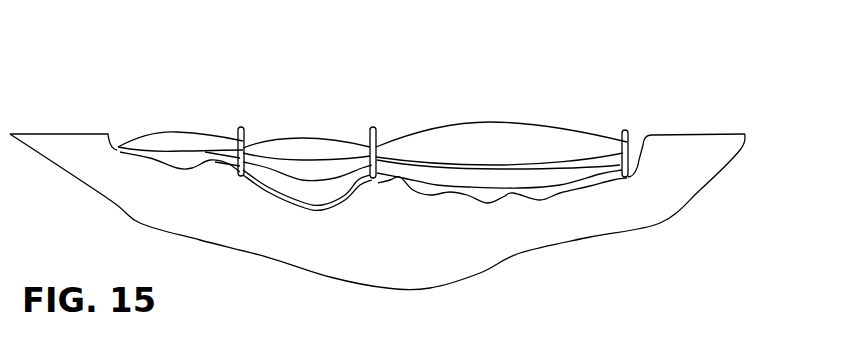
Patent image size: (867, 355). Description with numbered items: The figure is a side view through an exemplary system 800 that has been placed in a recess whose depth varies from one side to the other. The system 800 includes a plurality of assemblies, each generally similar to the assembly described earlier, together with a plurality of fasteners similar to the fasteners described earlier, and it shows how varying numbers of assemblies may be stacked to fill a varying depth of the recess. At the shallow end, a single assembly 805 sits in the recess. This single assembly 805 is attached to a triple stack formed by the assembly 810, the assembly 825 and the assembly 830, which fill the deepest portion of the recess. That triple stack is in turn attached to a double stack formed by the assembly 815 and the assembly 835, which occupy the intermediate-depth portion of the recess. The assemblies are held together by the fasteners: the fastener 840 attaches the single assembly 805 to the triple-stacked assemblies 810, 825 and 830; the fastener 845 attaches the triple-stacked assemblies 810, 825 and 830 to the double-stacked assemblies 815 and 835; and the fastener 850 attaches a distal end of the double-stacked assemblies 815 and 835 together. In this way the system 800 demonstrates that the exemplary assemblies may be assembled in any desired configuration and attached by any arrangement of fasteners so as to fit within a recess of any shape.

The system 800 is at (667, 80).
The single assembly 805 is at (175, 140).
The assembly 810 is at (308, 142).
The assembly 815 is at (505, 128).
The assembly 825 is at (283, 173).
The assembly 830 is at (318, 197).
The assembly 835 is at (468, 175).
The fastener 840 is at (240, 126).
The fastener 845 is at (373, 126).
The fastener 850 is at (625, 128).